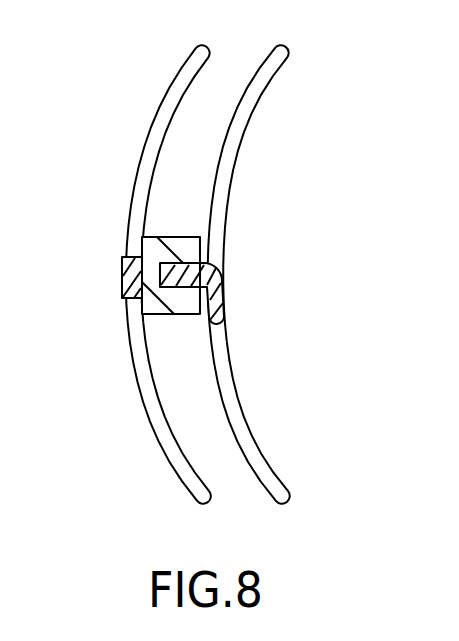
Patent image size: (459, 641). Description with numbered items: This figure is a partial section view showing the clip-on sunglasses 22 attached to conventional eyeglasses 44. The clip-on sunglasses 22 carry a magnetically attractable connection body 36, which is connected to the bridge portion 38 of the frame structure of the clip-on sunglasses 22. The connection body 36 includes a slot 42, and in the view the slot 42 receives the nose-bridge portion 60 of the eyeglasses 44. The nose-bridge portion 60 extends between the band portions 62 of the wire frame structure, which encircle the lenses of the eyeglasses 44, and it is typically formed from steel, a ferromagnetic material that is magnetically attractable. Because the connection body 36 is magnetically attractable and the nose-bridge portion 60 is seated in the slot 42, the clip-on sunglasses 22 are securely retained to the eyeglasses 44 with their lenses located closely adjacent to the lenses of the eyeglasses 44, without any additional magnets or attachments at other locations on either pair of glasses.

The clip-on sunglasses 22 is at (167, 85).
The conventional eyeglasses 44 is at (264, 97).
The band portions 62 is at (229, 163).
The connection body 36 is at (152, 247).
The bridge portion 38 is at (127, 275).
The slot 42 is at (176, 267).
The nose-bridge portion 60 is at (222, 298).